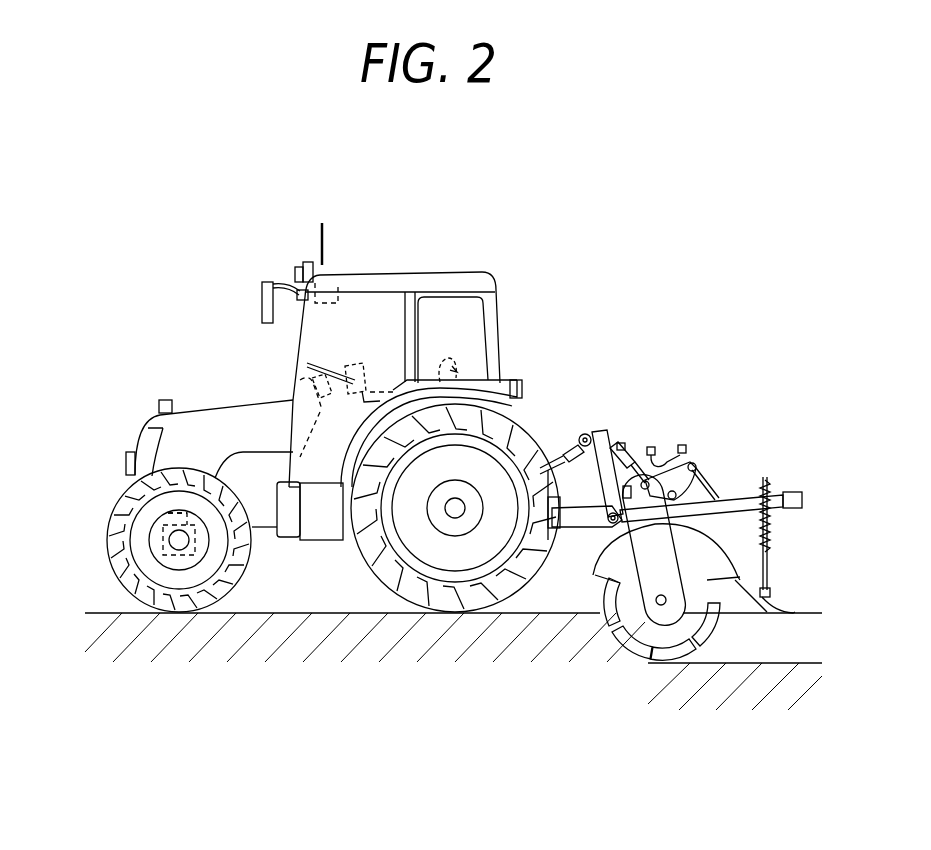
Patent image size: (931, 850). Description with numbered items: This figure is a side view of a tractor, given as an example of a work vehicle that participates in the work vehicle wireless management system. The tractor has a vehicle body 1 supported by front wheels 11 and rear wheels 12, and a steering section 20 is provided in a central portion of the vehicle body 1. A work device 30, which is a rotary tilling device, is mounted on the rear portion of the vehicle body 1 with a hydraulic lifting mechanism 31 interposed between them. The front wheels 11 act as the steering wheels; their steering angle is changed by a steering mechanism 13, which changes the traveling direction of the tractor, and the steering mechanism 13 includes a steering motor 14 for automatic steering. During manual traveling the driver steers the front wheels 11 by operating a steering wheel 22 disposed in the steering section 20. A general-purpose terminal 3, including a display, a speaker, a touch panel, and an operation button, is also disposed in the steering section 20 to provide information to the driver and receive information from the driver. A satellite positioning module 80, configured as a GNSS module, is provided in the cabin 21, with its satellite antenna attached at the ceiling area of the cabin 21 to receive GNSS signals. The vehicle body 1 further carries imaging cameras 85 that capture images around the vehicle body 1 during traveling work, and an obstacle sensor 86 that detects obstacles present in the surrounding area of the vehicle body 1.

The vehicle body 1 is at (292, 554).
The general-purpose terminal 3 is at (373, 361).
The front wheels 11 is at (176, 614).
The rear wheels 12 is at (466, 599).
The steering mechanism 13 is at (167, 540).
The steering motor 14 is at (152, 517).
The steering section 20 is at (362, 357).
The cabin 21 is at (470, 281).
The steering wheel 22 is at (322, 368).
The work device 30 is at (662, 647).
The hydraulic lifting mechanism 31 is at (609, 428).
The satellite positioning module 80 is at (329, 263).
The imaging cameras 85 is at (305, 262).
The obstacle sensor 86 is at (165, 399).